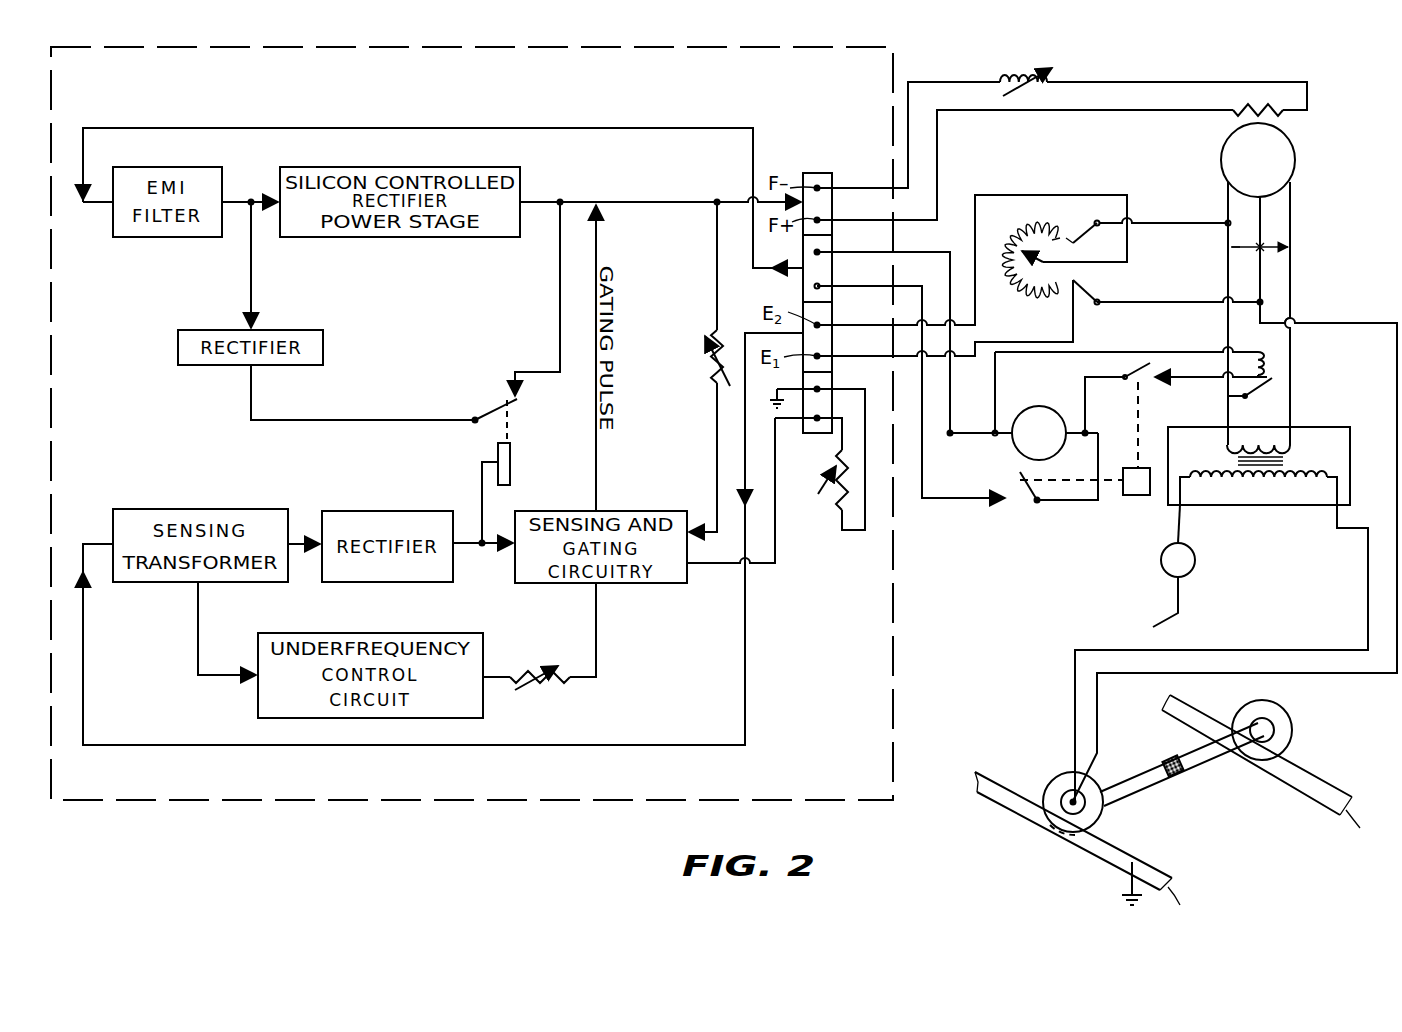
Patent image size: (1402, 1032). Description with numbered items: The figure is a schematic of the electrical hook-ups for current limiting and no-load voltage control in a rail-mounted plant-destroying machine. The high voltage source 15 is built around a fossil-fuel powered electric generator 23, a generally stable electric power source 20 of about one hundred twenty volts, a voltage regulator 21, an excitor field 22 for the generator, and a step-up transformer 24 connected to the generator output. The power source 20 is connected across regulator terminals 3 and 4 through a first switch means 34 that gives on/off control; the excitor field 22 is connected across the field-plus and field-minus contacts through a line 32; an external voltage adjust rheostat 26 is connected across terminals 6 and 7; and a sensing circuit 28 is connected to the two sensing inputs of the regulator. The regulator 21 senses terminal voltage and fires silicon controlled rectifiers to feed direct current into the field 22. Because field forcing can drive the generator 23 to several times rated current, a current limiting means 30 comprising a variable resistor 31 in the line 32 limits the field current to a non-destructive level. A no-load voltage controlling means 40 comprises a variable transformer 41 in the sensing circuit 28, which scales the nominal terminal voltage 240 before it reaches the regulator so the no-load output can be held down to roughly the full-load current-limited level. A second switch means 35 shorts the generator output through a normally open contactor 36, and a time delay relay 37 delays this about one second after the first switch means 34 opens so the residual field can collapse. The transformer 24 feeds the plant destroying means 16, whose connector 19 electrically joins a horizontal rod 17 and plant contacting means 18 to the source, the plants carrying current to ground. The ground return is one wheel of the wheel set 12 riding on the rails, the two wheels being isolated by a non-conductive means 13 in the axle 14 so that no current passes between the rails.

The regulator terminal 3 is at (818, 252).
The regulator terminal 4 is at (818, 286).
The regulator terminal 6 is at (818, 389).
The regulator terminal 7 is at (818, 418).
The wheel set 12 is at (1175, 806).
The non-conductive means 13 is at (1180, 776).
The axle 14 is at (1112, 783).
The high voltage source 15 is at (1318, 90).
The plant destroying means 16 is at (1182, 566).
The rod 17 is at (1162, 562).
The plant contacting means 18 is at (1168, 608).
The connector 19 is at (1172, 533).
The electric power source 20 is at (1015, 446).
The voltage regulator 21 is at (907, 68).
The excitor field 22 is at (1288, 114).
The electric generator 23 is at (1295, 160).
The step-up transformer 24 is at (1318, 442).
The voltage adjust rheostat 26 is at (833, 490).
The sensing circuit 28 is at (1162, 214).
The current limiting means 30 is at (1083, 74).
The variable resistor 31 is at (1036, 86).
The line 32 is at (1192, 82).
The first switch means 34 is at (1022, 508).
The second switch means 35 is at (1153, 360).
The contactor 36 is at (1268, 392).
The time delay relay 37 is at (1145, 491).
The no-load voltage controlling means 40 is at (1092, 276).
The variable transformer 41 is at (1045, 247).
The terminal voltage 240 is at (1263, 247).